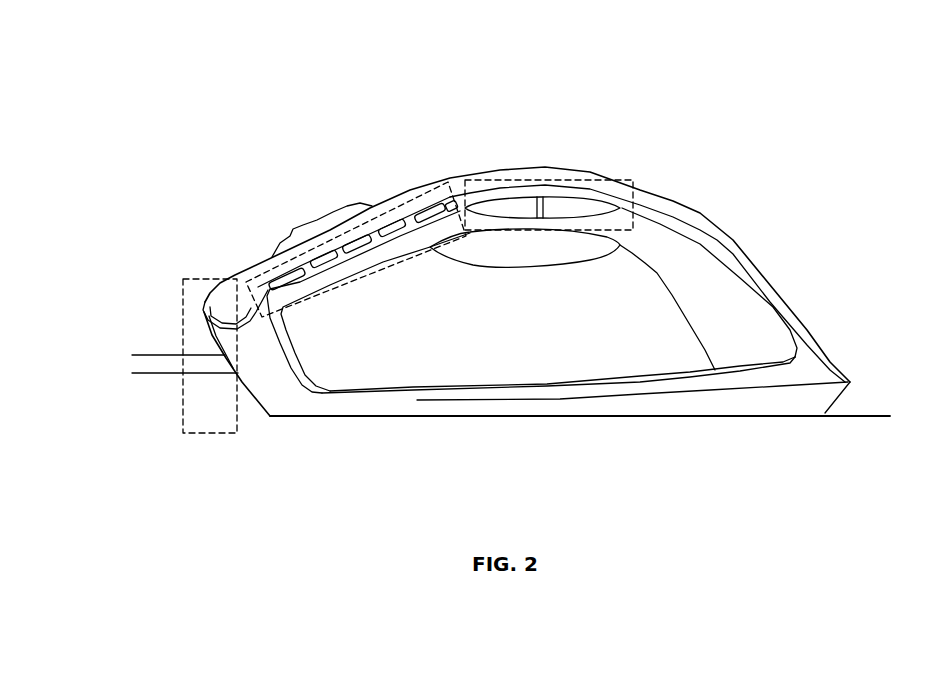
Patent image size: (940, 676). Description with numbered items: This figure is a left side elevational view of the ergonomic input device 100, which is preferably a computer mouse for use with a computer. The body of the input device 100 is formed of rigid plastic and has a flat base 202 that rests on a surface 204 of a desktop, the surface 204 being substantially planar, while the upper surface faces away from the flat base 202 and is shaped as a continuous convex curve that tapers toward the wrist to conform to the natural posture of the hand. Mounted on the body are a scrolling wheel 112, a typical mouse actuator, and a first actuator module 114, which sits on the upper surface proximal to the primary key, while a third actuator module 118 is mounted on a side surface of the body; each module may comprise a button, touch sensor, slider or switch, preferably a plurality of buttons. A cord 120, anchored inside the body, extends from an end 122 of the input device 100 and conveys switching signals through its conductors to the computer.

The input device 100 is at (527, 218).
The scrolling wheel 112 is at (322, 192).
The first actuator module 114 is at (356, 216).
The third actuator module 118 is at (549, 162).
The cord 120 is at (185, 418).
The end 122 is at (182, 340).
The flat base 202 is at (580, 447).
The surface 204 is at (878, 369).